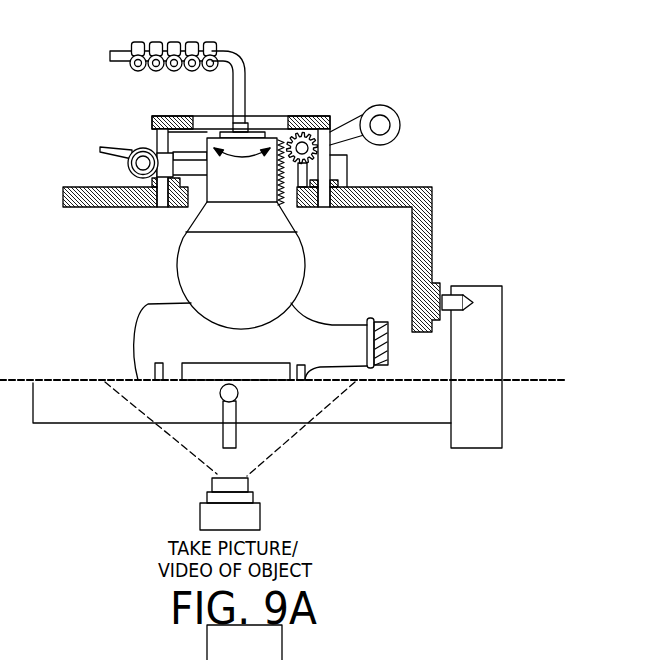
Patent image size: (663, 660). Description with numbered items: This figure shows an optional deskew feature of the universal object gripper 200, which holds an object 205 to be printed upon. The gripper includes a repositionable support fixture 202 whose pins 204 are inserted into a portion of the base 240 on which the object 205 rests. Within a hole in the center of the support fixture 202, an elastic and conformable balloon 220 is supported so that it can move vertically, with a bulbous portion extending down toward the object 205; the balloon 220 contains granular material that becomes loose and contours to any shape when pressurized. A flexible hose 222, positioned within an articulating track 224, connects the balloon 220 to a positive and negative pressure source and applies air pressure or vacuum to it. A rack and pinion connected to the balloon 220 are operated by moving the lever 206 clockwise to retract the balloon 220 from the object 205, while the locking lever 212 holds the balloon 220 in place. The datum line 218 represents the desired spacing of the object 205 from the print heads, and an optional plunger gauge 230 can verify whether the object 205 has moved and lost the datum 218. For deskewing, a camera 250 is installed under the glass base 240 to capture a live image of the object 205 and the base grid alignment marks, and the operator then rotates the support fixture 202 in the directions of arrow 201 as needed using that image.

The universal object gripper 200 is at (445, 77).
The arrow 201 is at (240, 160).
The repositionable support fixture 202 is at (434, 198).
The pins 204 is at (457, 297).
The object 205 is at (140, 316).
The lever 206 is at (357, 137).
The locking lever 212 is at (118, 156).
The datum line 218 is at (530, 379).
The balloon 220 is at (177, 262).
The flexible hose 222 is at (244, 62).
The articulating track 224 is at (173, 42).
The plunger gauge 230 is at (222, 437).
The base 240 is at (382, 418).
The camera 250 is at (260, 518).